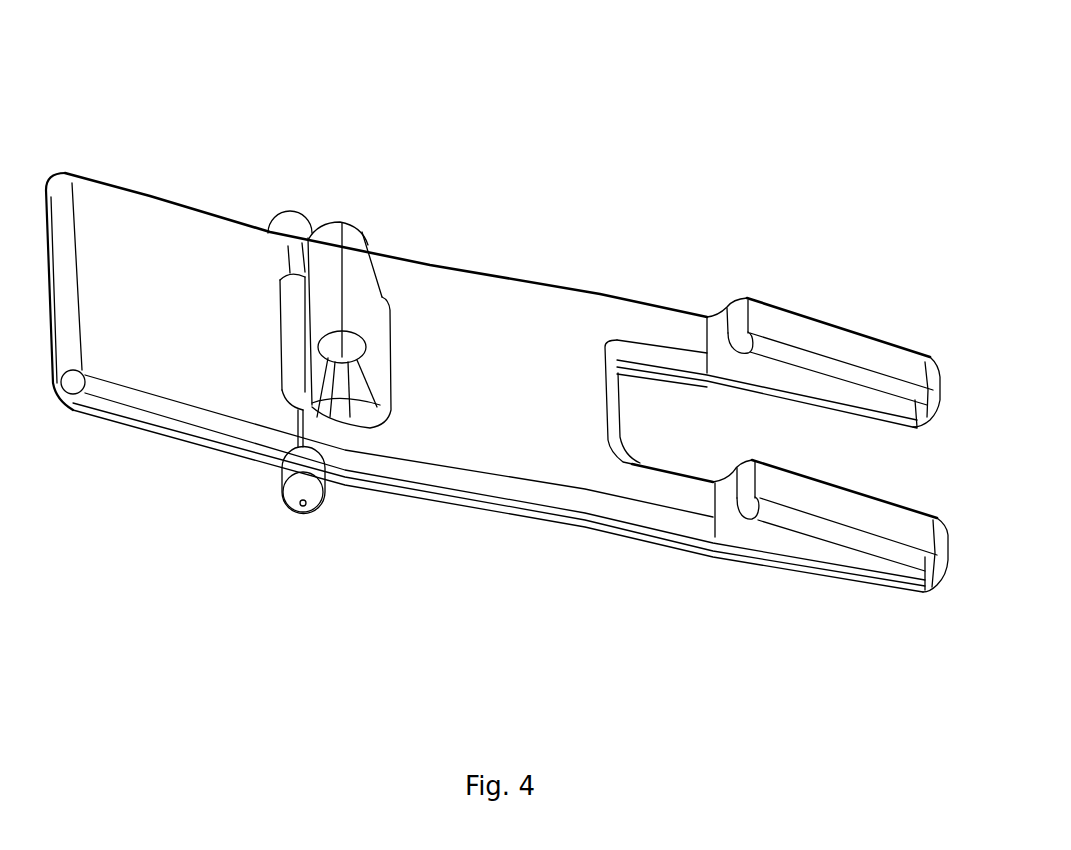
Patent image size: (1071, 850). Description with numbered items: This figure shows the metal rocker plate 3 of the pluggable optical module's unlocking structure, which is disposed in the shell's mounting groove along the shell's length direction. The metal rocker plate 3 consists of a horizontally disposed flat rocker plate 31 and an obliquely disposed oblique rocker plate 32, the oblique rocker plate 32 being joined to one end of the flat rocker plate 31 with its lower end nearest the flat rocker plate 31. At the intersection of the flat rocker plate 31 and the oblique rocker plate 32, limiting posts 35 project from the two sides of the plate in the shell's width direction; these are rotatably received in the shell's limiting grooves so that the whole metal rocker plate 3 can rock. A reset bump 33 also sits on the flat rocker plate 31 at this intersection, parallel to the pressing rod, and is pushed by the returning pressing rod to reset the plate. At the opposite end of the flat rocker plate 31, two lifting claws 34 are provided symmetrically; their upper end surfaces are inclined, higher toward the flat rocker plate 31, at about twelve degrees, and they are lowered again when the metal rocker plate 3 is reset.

The metal rocker plate 3 is at (497, 370).
The flat rocker plate 31 is at (508, 442).
The oblique rocker plate 32 is at (170, 365).
The reset bump 33 is at (332, 285).
The lifting claw 34 is at (818, 342).
The limiting post 35 is at (290, 230).